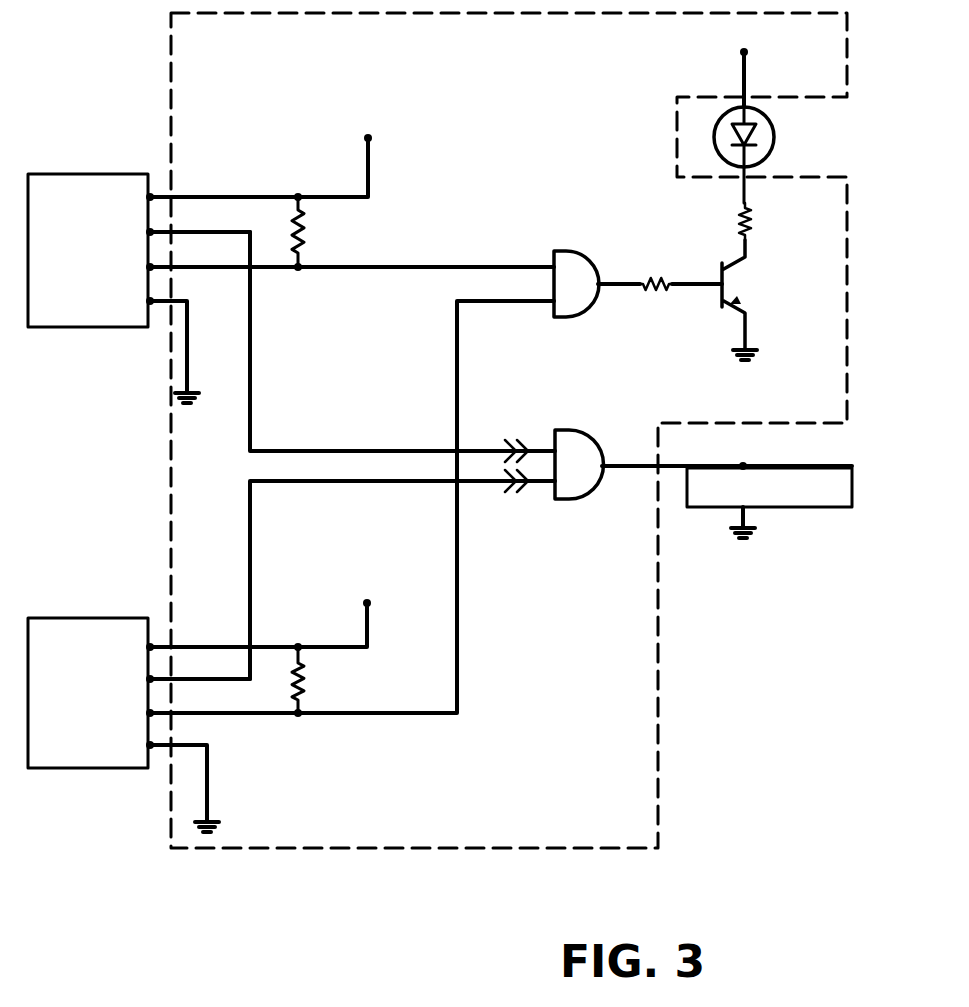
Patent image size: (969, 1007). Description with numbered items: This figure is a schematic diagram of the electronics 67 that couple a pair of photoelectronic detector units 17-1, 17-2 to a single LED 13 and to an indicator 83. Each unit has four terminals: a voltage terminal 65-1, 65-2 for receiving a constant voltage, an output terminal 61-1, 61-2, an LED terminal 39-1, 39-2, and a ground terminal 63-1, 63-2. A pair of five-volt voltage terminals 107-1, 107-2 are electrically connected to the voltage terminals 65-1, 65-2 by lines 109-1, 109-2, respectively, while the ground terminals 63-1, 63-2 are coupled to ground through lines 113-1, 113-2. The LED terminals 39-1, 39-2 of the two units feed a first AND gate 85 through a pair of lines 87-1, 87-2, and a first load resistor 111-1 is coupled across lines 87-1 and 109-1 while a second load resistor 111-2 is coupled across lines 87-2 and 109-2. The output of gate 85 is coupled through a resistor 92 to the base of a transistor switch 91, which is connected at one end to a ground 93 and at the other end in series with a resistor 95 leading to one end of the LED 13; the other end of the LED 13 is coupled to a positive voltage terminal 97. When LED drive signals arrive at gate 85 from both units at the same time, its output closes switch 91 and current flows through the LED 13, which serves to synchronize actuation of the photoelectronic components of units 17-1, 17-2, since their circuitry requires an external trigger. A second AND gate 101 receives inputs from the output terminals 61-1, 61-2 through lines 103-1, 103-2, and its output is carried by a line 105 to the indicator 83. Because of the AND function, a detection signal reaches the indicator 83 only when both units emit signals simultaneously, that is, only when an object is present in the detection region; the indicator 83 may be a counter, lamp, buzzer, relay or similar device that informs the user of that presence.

The first detector unit 17-1 is at (91, 250).
The second detector unit 17-2 is at (91, 693).
The voltage terminal of unit 17-1 65-1 is at (152, 195).
The voltage terminal of unit 17-2 65-2 is at (150, 645).
The output terminal of unit 17-1 61-1 is at (152, 231).
The output terminal of unit 17-2 61-2 is at (150, 678).
The LED lead 39-1 is at (152, 268).
The LED lead 39-2 is at (150, 712).
The ground terminal of unit 17-1 63-1 is at (152, 304).
The ground terminal of unit 17-2 63-2 is at (152, 748).
The ground line 113-1 is at (187, 368).
The ground line 113-2 is at (207, 792).
The supply line 109-1 is at (270, 196).
The supply line 109-2 is at (337, 646).
The +5v voltage terminal 107-1 is at (375, 140).
The +5v voltage terminal 107-2 is at (372, 604).
The first load resistor 111-1 is at (305, 226).
The second load resistor 111-2 is at (305, 670).
The LED signal line 87-1 is at (408, 266).
The LED signal line 87-2 is at (457, 373).
The output signal line 103-1 is at (252, 393).
The output signal line 103-2 is at (252, 548).
The first AND gate 85 is at (570, 250).
The resistor 92 is at (670, 283).
The transistor switch 91 is at (738, 288).
The ground 93 is at (748, 362).
The resistor 95 is at (740, 228).
The +voltage terminal 97 is at (750, 53).
The LED 13 is at (772, 133).
The second AND gate 101 is at (575, 500).
The line 105 is at (630, 470).
The indicator 83 is at (798, 510).
The electronics 67 is at (660, 690).